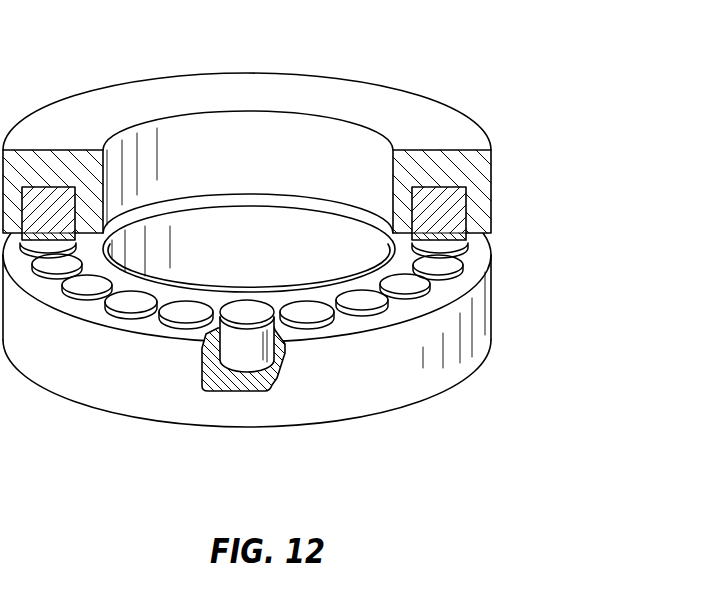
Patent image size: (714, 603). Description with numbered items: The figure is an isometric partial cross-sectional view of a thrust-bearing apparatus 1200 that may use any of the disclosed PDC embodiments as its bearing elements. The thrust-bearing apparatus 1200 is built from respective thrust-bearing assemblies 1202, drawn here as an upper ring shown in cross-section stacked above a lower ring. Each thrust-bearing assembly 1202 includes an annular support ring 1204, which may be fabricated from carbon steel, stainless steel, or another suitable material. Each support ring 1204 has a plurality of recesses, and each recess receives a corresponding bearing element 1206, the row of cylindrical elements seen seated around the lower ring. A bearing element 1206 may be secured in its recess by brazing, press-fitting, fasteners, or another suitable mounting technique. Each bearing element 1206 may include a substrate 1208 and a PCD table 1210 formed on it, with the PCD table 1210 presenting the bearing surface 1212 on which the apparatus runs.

The thrust-bearing apparatus 1200 is at (316, 245).
The thrust-bearing assembly 1202 is at (316, 263).
The annular support ring 1204 is at (468, 180).
The bearing element 1206 is at (229, 383).
The substrate 1208 is at (250, 353).
The PCD table 1210 is at (212, 332).
The bearing surface 1212 is at (240, 312).